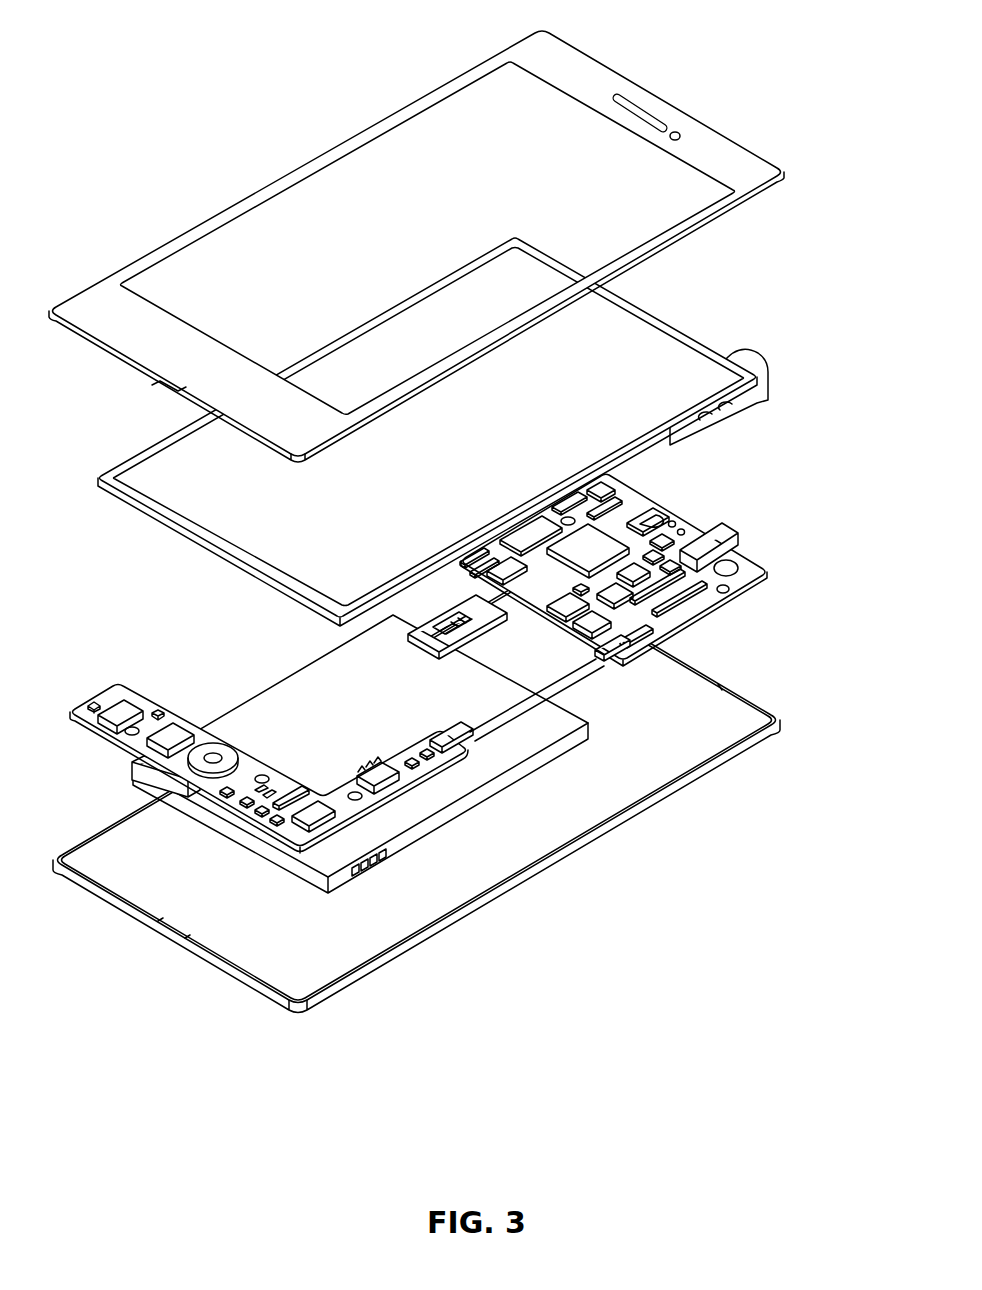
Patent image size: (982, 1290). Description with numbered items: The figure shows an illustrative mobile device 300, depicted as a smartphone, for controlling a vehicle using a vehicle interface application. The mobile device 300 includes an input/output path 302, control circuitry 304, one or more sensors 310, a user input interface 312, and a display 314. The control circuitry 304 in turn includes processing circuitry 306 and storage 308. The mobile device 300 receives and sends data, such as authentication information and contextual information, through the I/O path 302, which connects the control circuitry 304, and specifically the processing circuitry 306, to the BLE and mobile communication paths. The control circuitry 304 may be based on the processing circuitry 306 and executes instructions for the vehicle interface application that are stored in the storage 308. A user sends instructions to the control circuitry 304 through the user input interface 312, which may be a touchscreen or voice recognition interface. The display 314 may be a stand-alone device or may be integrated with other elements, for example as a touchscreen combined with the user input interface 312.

The mobile device 300 is at (439, 510).
The input/output (I/O) path 302 is at (168, 768).
The control circuitry 304 is at (659, 568).
The processing circuitry 306 is at (700, 556).
The storage 308 is at (598, 545).
The sensors 310 is at (698, 510).
The user input interface 312 is at (616, 345).
The display 314 is at (742, 352).